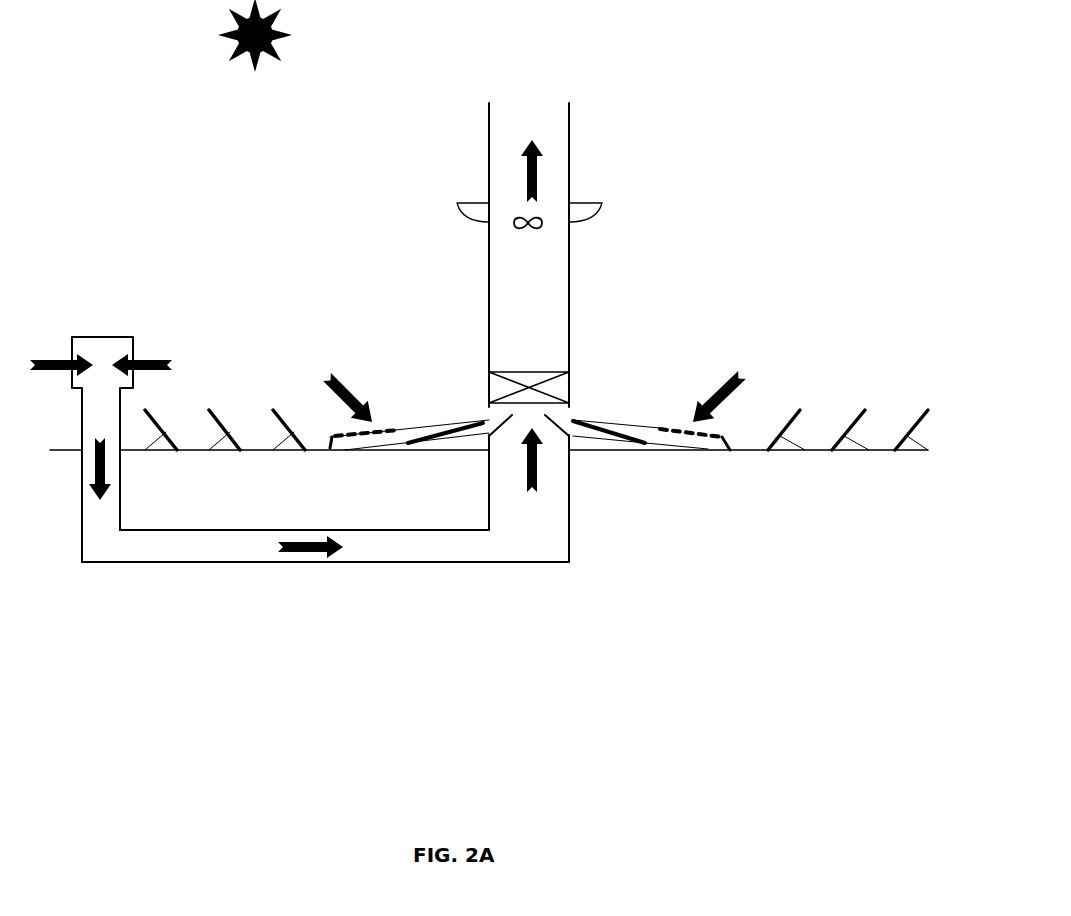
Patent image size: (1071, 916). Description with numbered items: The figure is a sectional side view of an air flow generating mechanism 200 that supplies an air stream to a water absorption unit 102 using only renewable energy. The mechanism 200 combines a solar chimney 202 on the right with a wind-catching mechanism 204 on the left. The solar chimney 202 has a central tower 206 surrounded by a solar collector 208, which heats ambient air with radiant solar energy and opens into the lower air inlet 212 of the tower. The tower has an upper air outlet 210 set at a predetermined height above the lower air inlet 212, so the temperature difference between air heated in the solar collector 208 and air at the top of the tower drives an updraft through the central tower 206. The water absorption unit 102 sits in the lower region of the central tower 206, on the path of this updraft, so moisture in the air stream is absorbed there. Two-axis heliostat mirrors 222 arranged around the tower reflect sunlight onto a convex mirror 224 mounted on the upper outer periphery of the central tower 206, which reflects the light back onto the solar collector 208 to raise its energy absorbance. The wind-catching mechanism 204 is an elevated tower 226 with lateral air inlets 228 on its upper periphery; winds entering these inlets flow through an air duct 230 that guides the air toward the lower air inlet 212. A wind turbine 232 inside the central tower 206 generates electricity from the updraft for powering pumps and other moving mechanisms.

The air flow generating mechanism 200 is at (793, 106).
The solar chimney 202 is at (328, 290).
The wind-catching mechanism 204 is at (156, 302).
The central tower 206 is at (489, 160).
The solar collector 208 is at (612, 396).
The upper air outlet 210 is at (569, 106).
The lower air inlet 212 is at (492, 418).
The two-axis heliostat mirrors 222 is at (868, 390).
The convex mirror 224 is at (588, 220).
The elevated tower 226 is at (120, 415).
The lateral air inlets 228 is at (144, 353).
The air duct 230 is at (175, 562).
The wind turbine 232 is at (500, 225).
The water absorption unit 102 is at (510, 372).